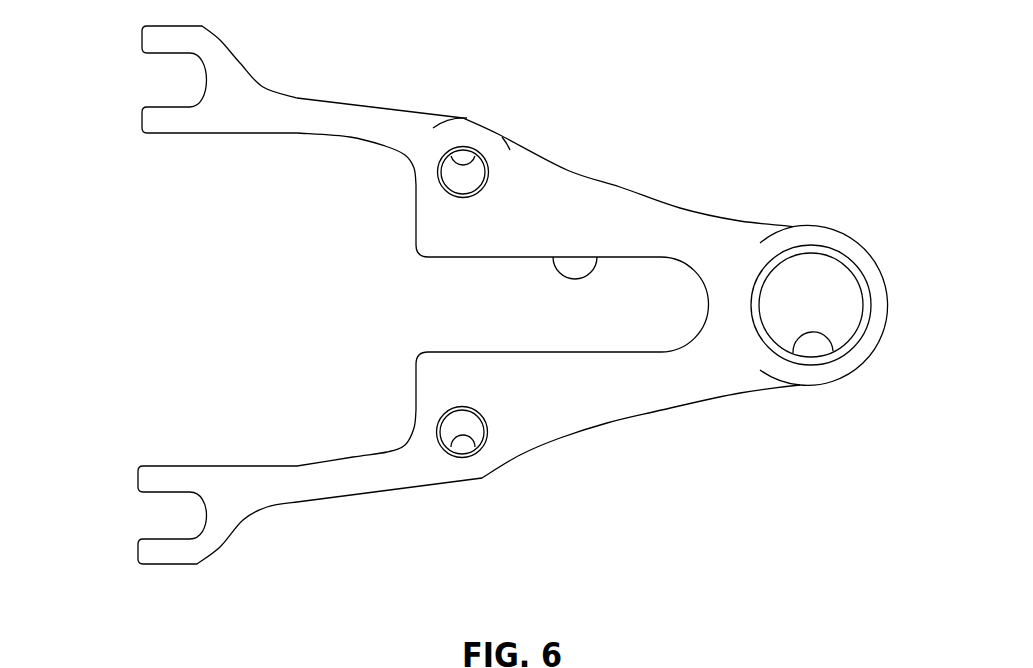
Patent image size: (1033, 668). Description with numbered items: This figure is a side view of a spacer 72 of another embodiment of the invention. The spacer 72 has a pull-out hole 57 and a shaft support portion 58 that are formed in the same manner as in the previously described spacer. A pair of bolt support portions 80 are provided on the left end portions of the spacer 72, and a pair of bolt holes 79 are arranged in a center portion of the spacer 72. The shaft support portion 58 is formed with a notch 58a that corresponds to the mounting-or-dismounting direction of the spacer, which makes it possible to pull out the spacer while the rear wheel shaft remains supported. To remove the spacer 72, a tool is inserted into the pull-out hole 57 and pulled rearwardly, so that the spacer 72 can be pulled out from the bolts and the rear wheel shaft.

The pull-out hole 57 is at (797, 355).
The shaft support portion 58 is at (608, 326).
The notch 58a is at (552, 262).
The spacer 72 is at (765, 210).
The bolt holes 79 is at (478, 151).
The bolt support portions 80 is at (155, 83).